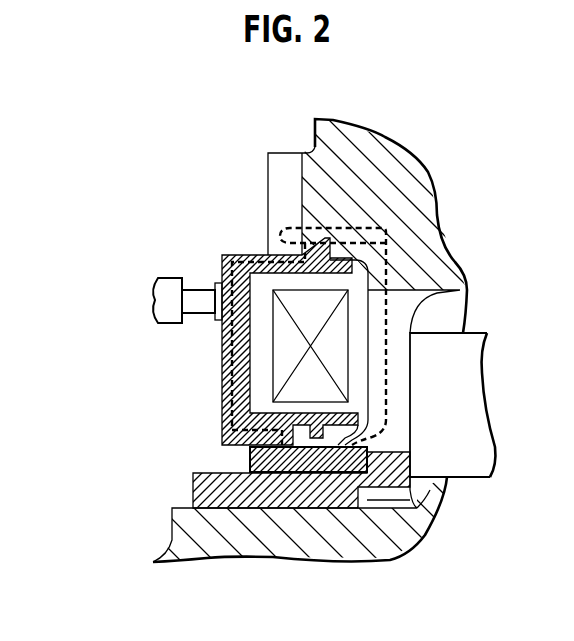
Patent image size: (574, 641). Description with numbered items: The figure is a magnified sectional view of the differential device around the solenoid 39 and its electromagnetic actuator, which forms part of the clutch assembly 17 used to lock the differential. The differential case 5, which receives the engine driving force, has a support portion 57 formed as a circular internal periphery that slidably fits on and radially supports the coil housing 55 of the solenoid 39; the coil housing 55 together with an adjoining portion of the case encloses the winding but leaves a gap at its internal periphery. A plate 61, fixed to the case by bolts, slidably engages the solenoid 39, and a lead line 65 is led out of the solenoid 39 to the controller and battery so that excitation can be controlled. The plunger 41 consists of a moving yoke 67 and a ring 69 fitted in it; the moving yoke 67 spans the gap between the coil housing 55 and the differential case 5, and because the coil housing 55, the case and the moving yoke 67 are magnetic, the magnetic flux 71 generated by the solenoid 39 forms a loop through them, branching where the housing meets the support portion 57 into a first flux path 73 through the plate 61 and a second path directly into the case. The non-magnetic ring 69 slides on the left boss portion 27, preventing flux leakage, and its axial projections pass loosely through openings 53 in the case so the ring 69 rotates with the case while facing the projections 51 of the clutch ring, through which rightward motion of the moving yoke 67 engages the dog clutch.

The differential case 5 is at (387, 126).
The clutch assembly 17 is at (166, 186).
The left boss portion 27 is at (212, 548).
The solenoid 39 is at (196, 408).
The plunger 41 is at (124, 470).
The projections 51 is at (432, 416).
The openings 53 is at (441, 283).
The coil housing 55 is at (292, 315).
The support portion 57 is at (322, 199).
The plate 61 is at (285, 165).
The lead line 65 is at (165, 280).
The moving yoke 67 is at (250, 463).
The ring 69 is at (203, 490).
The magnetic flux 71 is at (220, 354).
The first flux path 73 is at (380, 223).